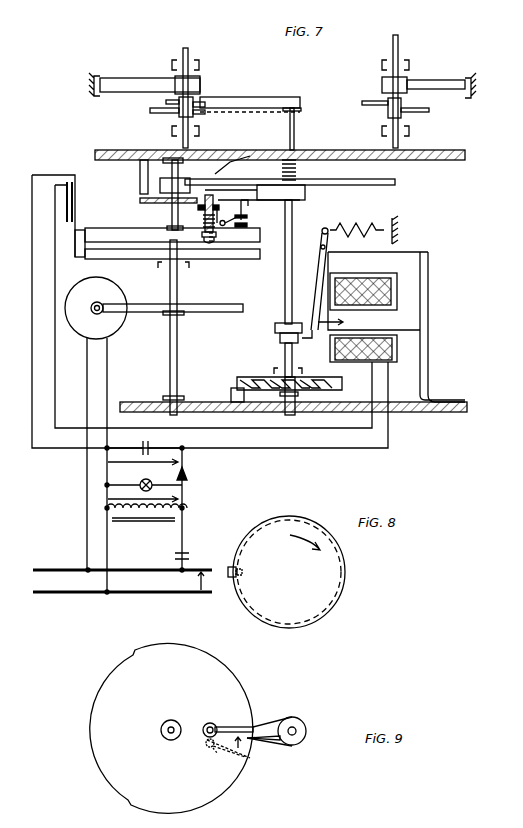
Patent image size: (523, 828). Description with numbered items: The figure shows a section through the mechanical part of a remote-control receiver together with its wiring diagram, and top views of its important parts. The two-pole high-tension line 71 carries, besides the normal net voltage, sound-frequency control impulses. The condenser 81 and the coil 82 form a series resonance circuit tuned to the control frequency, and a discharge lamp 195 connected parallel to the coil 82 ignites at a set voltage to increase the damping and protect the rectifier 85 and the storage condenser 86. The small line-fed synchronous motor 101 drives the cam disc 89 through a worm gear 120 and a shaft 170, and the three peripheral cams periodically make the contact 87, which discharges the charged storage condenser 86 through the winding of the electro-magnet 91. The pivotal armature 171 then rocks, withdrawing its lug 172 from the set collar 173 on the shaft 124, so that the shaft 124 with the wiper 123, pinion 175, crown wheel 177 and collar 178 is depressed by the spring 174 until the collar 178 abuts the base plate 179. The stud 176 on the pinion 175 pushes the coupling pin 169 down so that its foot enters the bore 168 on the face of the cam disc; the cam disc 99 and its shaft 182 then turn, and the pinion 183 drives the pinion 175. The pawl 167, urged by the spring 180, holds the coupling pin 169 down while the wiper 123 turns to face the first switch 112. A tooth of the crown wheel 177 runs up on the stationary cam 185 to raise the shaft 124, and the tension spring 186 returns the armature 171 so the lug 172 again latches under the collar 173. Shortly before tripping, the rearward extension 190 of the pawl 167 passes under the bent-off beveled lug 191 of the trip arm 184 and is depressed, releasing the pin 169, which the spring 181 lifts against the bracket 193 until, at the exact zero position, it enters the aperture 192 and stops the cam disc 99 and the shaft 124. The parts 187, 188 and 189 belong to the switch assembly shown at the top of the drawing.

In FIG. 7, the two-pole high-tension line 71 is at (62, 593).
In FIG. 7, the condenser 81 is at (186, 553).
In FIG. 7, the coil 82 is at (183, 510).
In FIG. 7, the rectifier 85 is at (189, 474).
In FIG. 7, the storage condenser 86 is at (150, 446).
In FIG. 7, the contact 87 is at (72, 206).
In FIG. 7, the cam disc 89 is at (150, 258).
In FIG. 7, the electro-magnet 91 is at (390, 365).
In FIG. 7, the cam disc 99 is at (95, 226).
In FIG. 9, the cam disc 99 is at (100, 707).
In FIG. 7, the synchronous motor 101 is at (92, 290).
In FIG. 7, the switch 112 is at (115, 80).
In FIG. 7, the worm gear 120 is at (97, 315).
In FIG. 7, the wiper 123 is at (283, 99).
In FIG. 7, the shaft 124 is at (286, 270).
In FIG. 7, the pawl 167 is at (225, 210).
In FIG. 9, the pawl 167 is at (212, 722).
In FIG. 7, the bore 168 is at (209, 258).
In FIG. 9, the bore 168 is at (212, 750).
In FIG. 7, the coupling pin 169 is at (205, 232).
In FIG. 9, the coupling pin 169 is at (206, 745).
In FIG. 7, the shaft 170 is at (176, 358).
In FIG. 7, the pivotal armature 171 is at (325, 270).
In FIG. 7, the lug 172 is at (312, 338).
In FIG. 7, the set collar 173 is at (275, 328).
In FIG. 7, the spring 174 is at (296, 168).
In FIG. 7, the pinion 175 is at (395, 181).
In FIG. 7, the stud 176 is at (235, 190).
In FIG. 7, the crown wheel 177 is at (340, 398).
In FIG. 8, the crown wheel 177 is at (338, 572).
In FIG. 7, the collar 178 is at (282, 405).
In FIG. 7, the base plate 179 is at (455, 412).
In FIG. 7, the spring 180 is at (250, 220).
In FIG. 7, the spring 181 is at (198, 207).
In FIG. 7, the shaft 182 is at (142, 204).
In FIG. 7, the pinion 183 is at (160, 183).
In FIG. 7, the trip arm 184 is at (305, 192).
In FIG. 9, the trip arm 184 is at (282, 720).
In FIG. 7, the stationary cam 185 is at (231, 392).
In FIG. 8, the stationary cam 185 is at (231, 578).
In FIG. 7, the tension spring 186 is at (378, 226).
In FIG. 7, the arm 187 is at (162, 111).
In FIG. 7, the shaft 188 is at (192, 78).
In FIG. 7, the clutch block 189 is at (197, 101).
In FIG. 7, the rearward extension 190 is at (248, 216).
In FIG. 9, the rearward extension 190 is at (245, 726).
In FIG. 7, the lug 191 is at (248, 206).
In FIG. 9, the lug 191 is at (264, 742).
In FIG. 7, the aperture 192 is at (150, 180).
In FIG. 7, the bracket 193 is at (172, 200).
In FIG. 7, the discharge lamp 195 is at (150, 476).